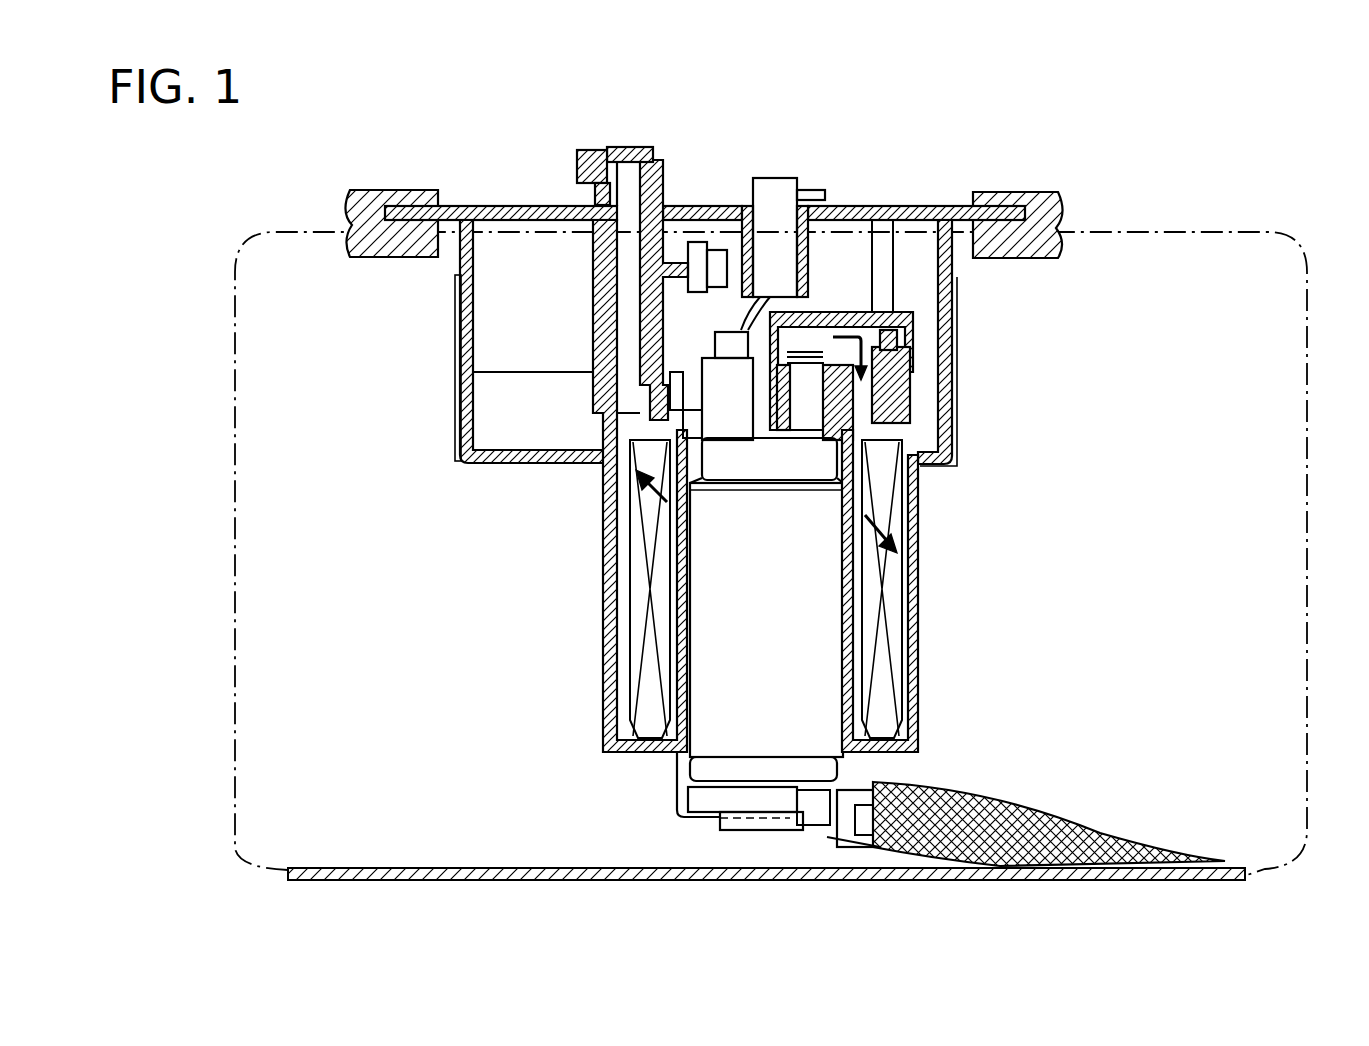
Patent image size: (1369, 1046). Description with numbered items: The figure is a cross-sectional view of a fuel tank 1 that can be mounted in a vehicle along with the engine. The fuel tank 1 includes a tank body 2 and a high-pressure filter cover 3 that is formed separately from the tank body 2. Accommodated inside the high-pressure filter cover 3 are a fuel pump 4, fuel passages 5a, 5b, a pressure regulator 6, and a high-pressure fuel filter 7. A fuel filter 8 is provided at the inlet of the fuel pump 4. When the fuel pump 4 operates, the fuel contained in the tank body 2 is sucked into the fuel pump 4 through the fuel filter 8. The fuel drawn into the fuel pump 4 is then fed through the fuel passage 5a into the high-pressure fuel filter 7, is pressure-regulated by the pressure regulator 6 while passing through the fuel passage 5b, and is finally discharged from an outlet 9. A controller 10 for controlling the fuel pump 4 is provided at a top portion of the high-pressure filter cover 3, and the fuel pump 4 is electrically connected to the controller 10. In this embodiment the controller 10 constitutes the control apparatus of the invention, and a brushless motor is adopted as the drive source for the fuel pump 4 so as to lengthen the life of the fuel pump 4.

The fuel tank 1 is at (1188, 227).
The tank body 2 is at (366, 872).
The high-pressure filter cover 3 is at (957, 330).
The fuel pump 4 is at (698, 758).
The fuel passage 5a is at (852, 312).
The fuel passage 5b is at (620, 312).
The pressure regulator 6 is at (722, 250).
The high-pressure fuel filter 7 is at (640, 736).
The fuel filter 8 is at (950, 840).
The outlet 9 is at (588, 165).
The controller 10 is at (773, 190).